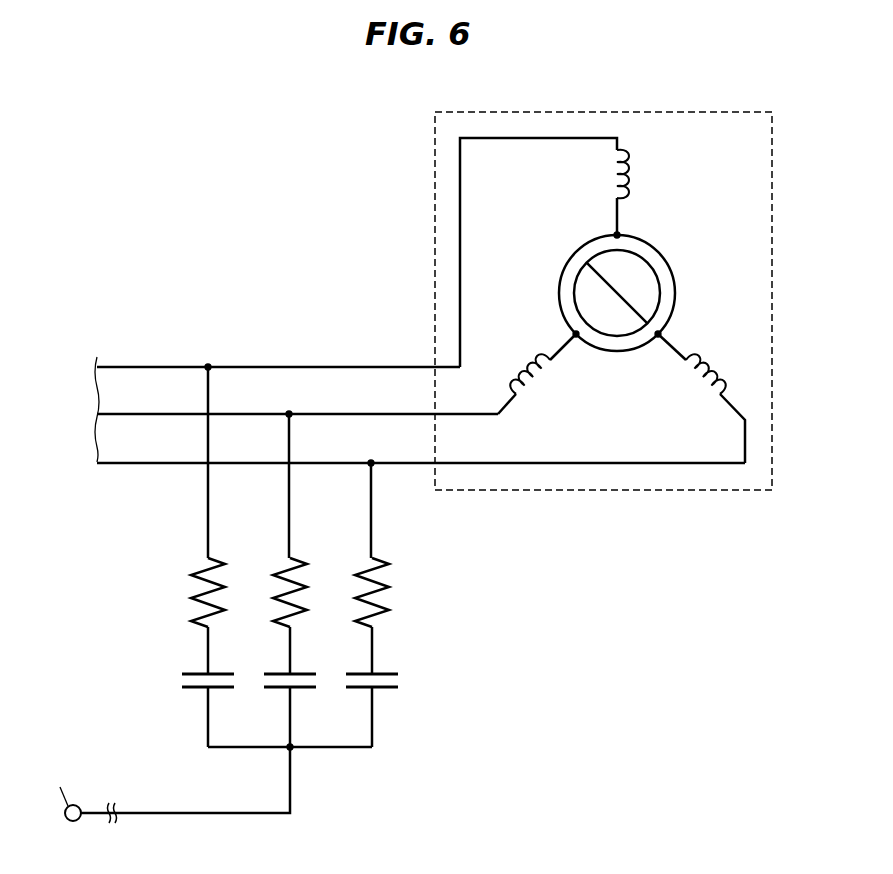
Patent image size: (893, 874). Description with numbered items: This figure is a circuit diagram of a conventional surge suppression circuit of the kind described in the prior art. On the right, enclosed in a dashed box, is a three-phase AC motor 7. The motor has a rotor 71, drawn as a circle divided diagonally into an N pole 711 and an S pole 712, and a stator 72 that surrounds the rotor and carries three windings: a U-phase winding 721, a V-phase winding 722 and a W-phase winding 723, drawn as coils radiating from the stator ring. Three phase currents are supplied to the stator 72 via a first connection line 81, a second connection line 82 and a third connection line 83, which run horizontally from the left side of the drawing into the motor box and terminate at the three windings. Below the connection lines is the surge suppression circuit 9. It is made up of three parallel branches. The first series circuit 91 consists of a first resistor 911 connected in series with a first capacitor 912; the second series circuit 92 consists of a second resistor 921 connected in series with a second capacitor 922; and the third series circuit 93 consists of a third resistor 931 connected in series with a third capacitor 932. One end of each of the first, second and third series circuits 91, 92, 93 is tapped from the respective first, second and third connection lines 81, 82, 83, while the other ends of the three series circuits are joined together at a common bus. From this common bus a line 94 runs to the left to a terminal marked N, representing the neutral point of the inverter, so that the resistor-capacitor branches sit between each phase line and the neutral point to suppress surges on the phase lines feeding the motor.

The three-phase AC motor 7 is at (697, 112).
The stator 72 is at (602, 300).
The rotor 71 is at (657, 274).
The N pole 711 is at (652, 300).
The S pole 712 is at (621, 332).
The U-phase winding 721 is at (606, 174).
The V-phase winding 722 is at (530, 377).
The W-phase winding 723 is at (701, 380).
The first connection line 81 is at (315, 366).
The second connection line 82 is at (323, 414).
The third connection line 83 is at (330, 462).
The surge suppression circuit 9 is at (185, 557).
The first series circuit 91 is at (207, 577).
The second series circuit 92 is at (289, 601).
The third series circuit 93 is at (371, 625).
The first resistor 911 is at (218, 560).
The first capacitor 912 is at (189, 690).
The second resistor 921 is at (300, 560).
The second capacitor 922 is at (271, 690).
The third resistor 931 is at (382, 560).
The third capacitor 932 is at (356, 690).
The neutral line 94 is at (210, 815).